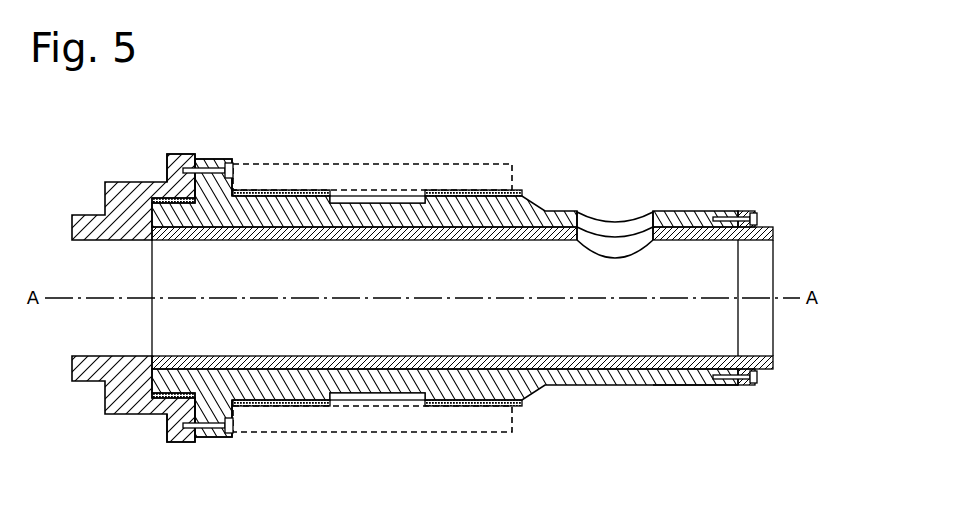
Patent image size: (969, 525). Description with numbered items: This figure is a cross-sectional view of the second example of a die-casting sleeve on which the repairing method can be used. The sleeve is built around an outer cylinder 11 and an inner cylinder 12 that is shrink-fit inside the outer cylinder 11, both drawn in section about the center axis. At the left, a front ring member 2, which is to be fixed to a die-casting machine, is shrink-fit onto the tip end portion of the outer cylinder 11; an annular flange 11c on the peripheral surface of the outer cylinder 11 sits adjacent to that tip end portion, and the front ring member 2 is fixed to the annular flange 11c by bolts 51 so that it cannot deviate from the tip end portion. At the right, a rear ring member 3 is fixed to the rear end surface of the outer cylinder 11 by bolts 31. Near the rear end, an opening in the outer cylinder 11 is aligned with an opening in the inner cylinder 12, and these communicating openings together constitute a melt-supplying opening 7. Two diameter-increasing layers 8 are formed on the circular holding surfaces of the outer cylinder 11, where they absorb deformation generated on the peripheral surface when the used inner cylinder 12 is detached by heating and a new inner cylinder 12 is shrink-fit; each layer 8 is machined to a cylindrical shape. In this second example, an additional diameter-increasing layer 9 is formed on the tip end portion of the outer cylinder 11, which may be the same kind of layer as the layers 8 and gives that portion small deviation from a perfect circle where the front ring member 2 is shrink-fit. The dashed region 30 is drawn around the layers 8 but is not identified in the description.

The front ring member 2 is at (116, 185).
The diameter-increasing layer 9 is at (162, 196).
The outer cylinder 11 is at (452, 212).
The annular flange 11c is at (206, 160).
The inner cylinder 12 is at (556, 225).
The rear ring member 3 is at (775, 230).
The melt-supplying opening 7 is at (620, 208).
The diameter-increasing layer 8 is at (316, 190).
The heater region 30 is at (370, 164).
The bolt 51 is at (233, 165).
The bolt 31 is at (758, 217).